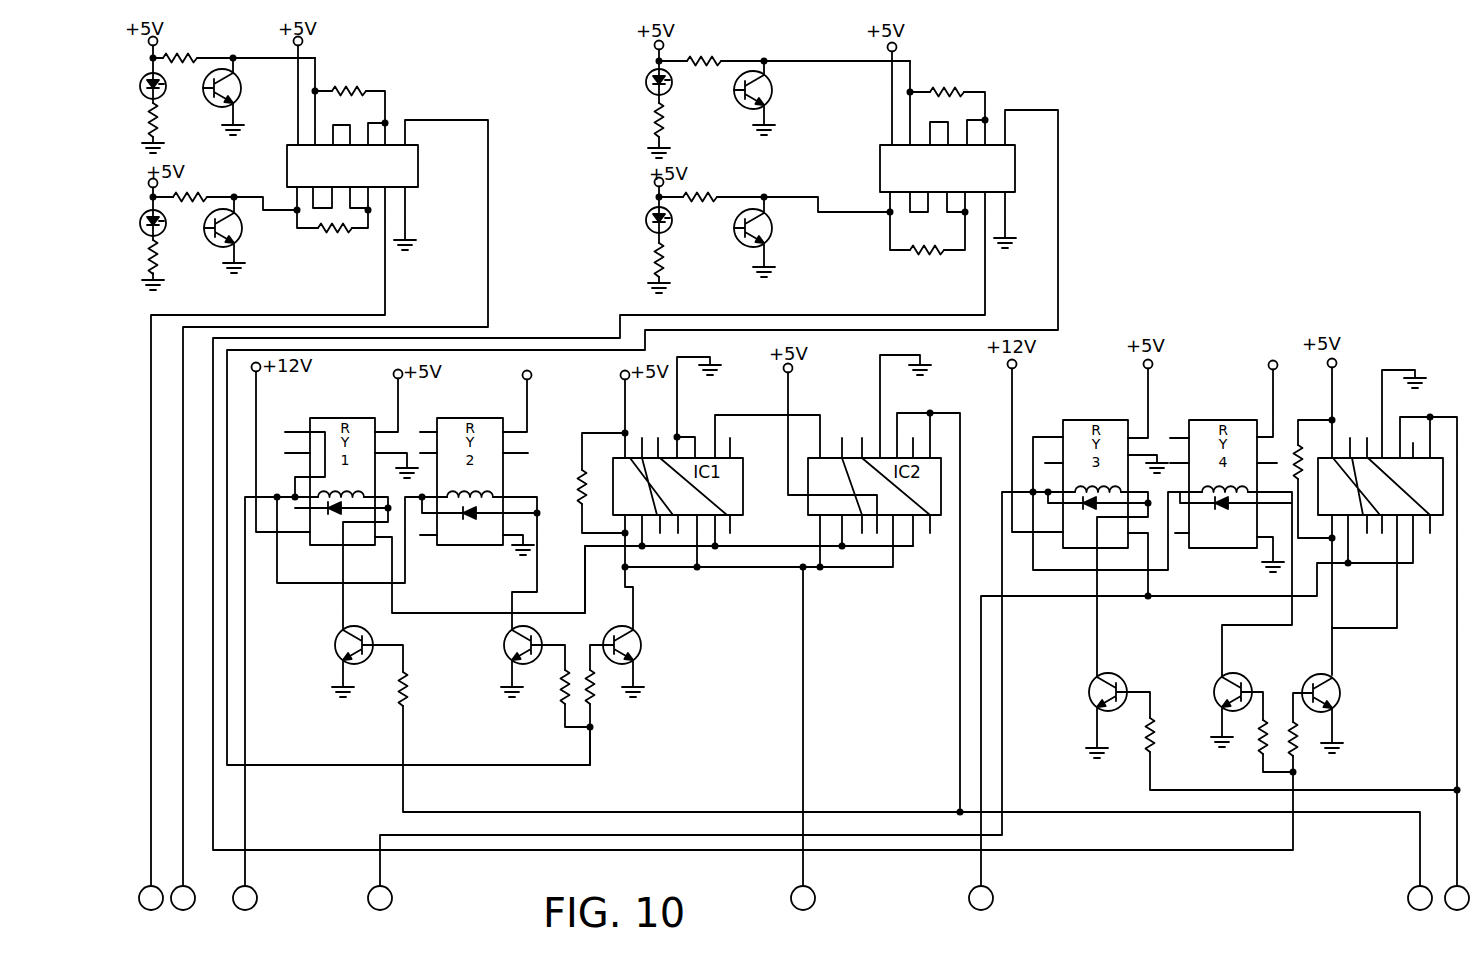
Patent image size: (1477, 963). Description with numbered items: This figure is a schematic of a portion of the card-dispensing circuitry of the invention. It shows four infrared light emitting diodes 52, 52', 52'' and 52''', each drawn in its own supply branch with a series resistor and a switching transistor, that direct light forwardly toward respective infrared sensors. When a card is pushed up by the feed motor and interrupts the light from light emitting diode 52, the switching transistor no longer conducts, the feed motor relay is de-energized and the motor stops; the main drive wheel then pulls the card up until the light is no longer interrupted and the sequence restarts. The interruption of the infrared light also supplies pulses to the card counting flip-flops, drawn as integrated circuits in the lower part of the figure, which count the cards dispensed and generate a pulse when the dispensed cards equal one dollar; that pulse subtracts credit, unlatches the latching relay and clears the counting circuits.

The light emitting diode 52 is at (126, 97).
The light emitting diode 52' is at (126, 234).
The light emitting diode 52'' is at (617, 98).
The light emitting diode 52''' is at (618, 230).